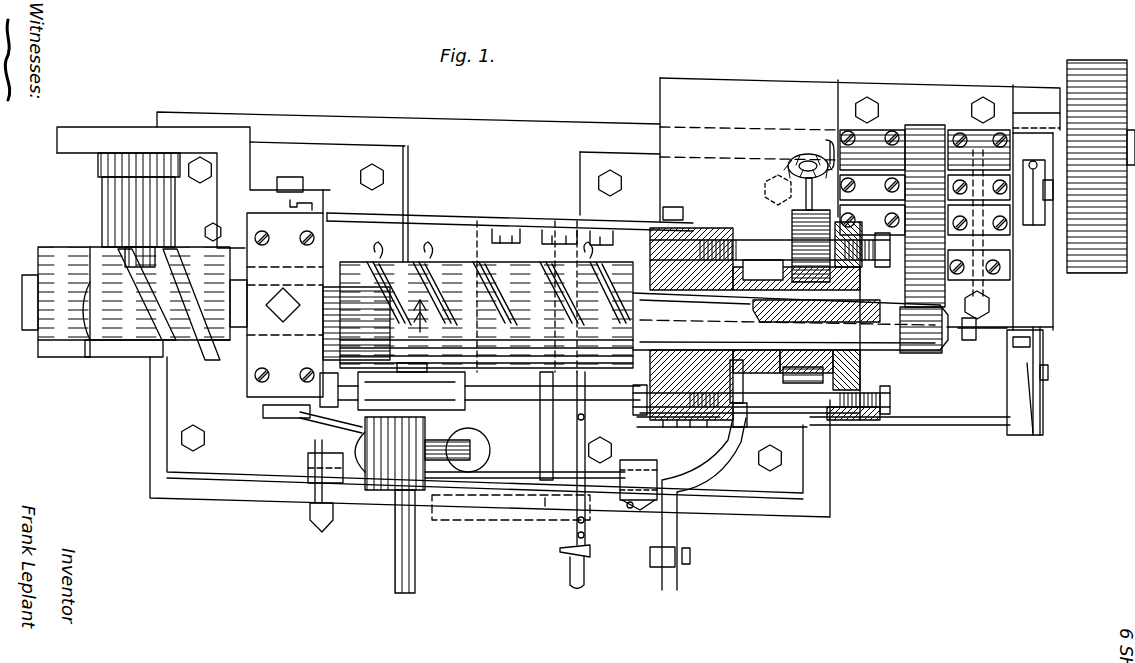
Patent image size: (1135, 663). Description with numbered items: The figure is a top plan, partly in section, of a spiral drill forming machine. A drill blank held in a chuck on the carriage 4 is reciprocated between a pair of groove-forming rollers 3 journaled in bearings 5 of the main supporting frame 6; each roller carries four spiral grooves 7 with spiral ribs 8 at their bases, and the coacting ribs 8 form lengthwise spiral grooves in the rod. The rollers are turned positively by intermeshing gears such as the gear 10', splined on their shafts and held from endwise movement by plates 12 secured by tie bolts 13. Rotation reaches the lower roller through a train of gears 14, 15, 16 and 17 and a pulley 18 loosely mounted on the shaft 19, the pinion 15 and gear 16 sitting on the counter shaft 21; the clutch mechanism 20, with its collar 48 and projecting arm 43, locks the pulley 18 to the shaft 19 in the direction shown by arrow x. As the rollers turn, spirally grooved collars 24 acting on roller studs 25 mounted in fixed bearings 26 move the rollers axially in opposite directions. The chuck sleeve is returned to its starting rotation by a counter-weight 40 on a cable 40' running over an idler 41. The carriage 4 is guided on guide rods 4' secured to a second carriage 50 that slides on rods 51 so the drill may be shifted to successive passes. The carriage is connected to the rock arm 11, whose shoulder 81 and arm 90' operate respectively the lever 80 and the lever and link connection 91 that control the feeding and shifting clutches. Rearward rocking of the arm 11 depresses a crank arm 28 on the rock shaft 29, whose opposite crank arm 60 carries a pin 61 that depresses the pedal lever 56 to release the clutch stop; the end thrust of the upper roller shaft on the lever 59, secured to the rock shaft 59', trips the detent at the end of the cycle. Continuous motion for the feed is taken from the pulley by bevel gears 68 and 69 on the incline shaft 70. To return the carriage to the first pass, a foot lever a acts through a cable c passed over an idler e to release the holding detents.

The groove-forming roller 3 is at (352, 265).
The carriage 4 is at (390, 474).
The guide rods 4' is at (421, 541).
The bearings 5 is at (257, 318).
The main supporting frame 6 is at (738, 475).
The spiral grooves 7 is at (372, 263).
The spiral ribs 8 is at (378, 265).
The gear 10' is at (741, 406).
The rock arm 11 is at (483, 512).
The plates 12 is at (858, 368).
The tie bolts 13 is at (752, 243).
The gear 14 is at (800, 385).
The pinion 15 is at (830, 220).
The gear 16 is at (942, 298).
The pinion 17 is at (920, 140).
The pulley 18 is at (1093, 62).
The shaft 19 is at (1050, 160).
The clutch mechanism 20 is at (1055, 185).
The counter shaft 21 is at (790, 232).
The spirally grooved collars 24 is at (62, 330).
The roller studs 25 is at (140, 245).
The fixed bearings 26 is at (104, 190).
The crank arm 28 is at (558, 426).
The rock shaft 29 is at (960, 426).
The counter-weight 40 is at (525, 483).
The cable 40' is at (489, 440).
The idler 41 is at (466, 445).
The arm 43 is at (1034, 226).
The collar 48 is at (1032, 150).
The second carriage 50 is at (480, 386).
The rods 51 is at (640, 426).
The pedal lever 56 is at (1043, 338).
The lever 59 is at (981, 342).
The rock shaft 59' is at (1000, 304).
The crank arm 60 is at (1040, 408).
The pin 61 is at (1050, 372).
The bevel gear 68 is at (828, 142).
The bevel gear 69 is at (795, 158).
The incline shaft 70 is at (805, 195).
The rock arm 80 is at (587, 527).
The shoulder 81 is at (533, 508).
The arm 90' is at (640, 498).
The lever and link connection 91 is at (676, 527).
The foot lever a is at (320, 532).
The cable c is at (331, 426).
The idler e is at (282, 418).
The arrow x is at (426, 316).